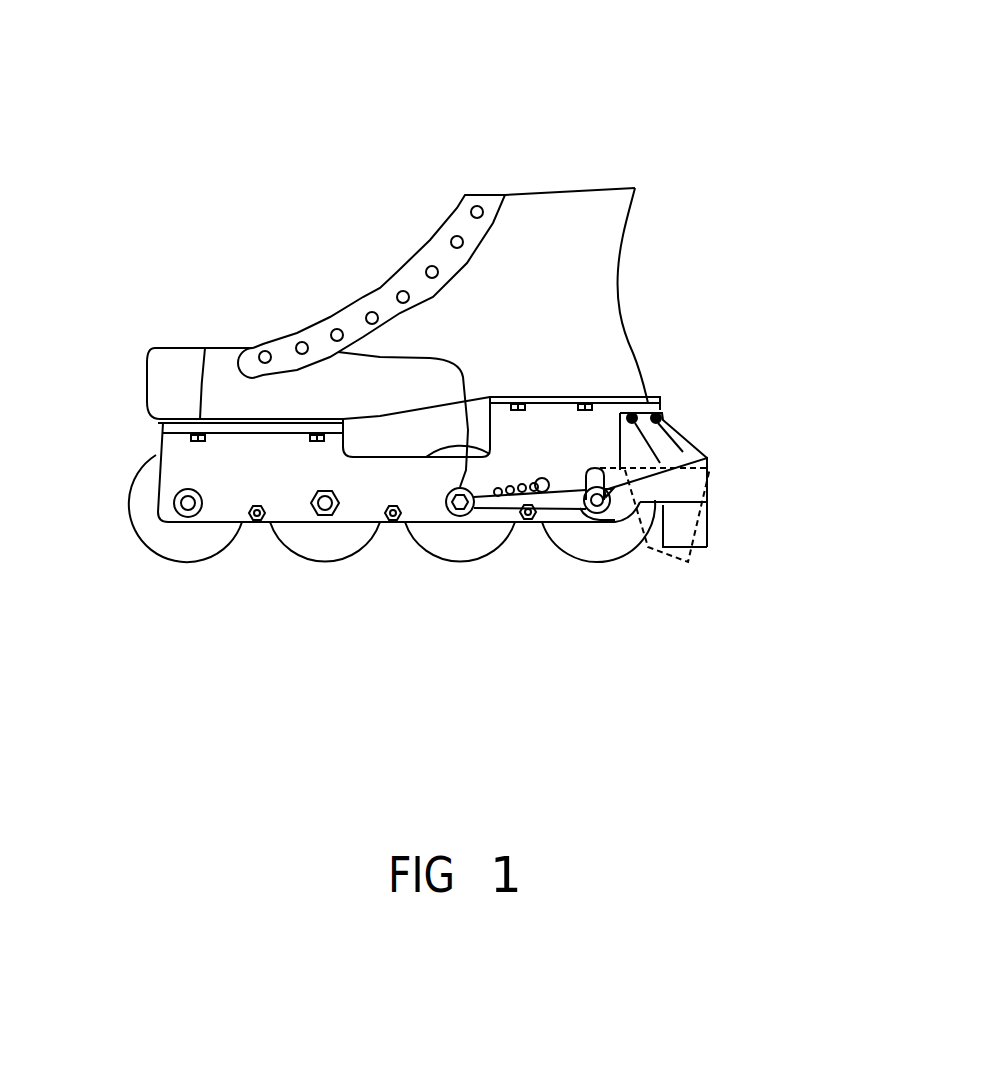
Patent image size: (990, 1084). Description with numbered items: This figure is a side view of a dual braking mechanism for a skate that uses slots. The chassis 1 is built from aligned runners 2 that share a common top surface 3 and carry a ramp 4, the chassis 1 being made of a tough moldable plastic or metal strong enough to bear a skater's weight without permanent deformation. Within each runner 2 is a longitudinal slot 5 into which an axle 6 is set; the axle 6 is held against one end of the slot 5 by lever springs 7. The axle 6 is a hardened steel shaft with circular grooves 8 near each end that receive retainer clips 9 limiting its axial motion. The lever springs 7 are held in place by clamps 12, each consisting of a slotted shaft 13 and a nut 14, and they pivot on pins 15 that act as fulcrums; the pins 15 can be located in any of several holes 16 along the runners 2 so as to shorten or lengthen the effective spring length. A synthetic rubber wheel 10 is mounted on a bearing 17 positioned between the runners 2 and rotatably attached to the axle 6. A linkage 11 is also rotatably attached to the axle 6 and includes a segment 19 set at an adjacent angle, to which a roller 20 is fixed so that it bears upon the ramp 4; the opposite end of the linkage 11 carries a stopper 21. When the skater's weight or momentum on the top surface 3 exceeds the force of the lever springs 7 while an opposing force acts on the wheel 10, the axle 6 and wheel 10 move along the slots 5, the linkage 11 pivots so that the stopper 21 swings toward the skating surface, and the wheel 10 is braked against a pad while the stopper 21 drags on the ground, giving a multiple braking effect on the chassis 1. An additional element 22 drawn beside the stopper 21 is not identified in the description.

The chassis 1 is at (255, 460).
The runners 2 is at (293, 522).
The top surface 3 is at (577, 400).
The ramp 4 is at (658, 418).
The longitudinal slot 5 is at (590, 483).
The axle 6 is at (597, 513).
The lever springs 7 is at (483, 503).
The circular grooves 8 is at (595, 484).
The retainer clips 9 is at (608, 493).
The wheel 10 is at (624, 548).
The linkage 11 is at (713, 490).
The clamps 12 is at (338, 353).
The slotted shaft 13 is at (371, 284).
The nut 14 is at (245, 363).
The pins 15 is at (540, 495).
The holes 16 is at (500, 505).
The bearing 17 is at (598, 531).
The segment 19 is at (668, 464).
The roller 20 is at (635, 416).
The stopper 21 is at (690, 555).
The brake pad holder 22 is at (667, 515).